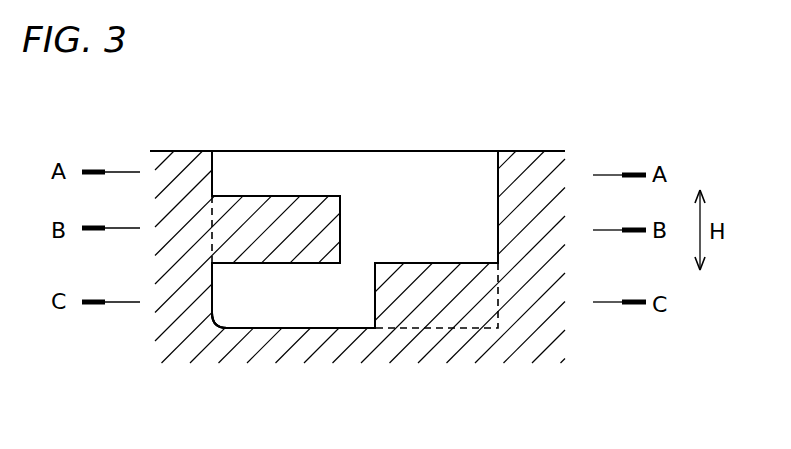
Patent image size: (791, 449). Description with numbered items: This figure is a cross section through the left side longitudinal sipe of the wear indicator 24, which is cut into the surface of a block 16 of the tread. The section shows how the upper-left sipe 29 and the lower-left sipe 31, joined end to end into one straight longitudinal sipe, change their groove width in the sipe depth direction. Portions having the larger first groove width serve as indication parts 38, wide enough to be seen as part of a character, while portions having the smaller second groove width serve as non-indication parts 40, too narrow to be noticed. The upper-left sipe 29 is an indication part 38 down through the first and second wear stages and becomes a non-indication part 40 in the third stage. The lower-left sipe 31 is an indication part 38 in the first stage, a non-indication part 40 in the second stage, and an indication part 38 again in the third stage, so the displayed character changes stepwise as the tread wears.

The block 16 is at (547, 165).
The wear indicator 24 is at (368, 127).
The upper-left sipe 29 is at (445, 159).
The lower-left sipe 31 is at (283, 159).
The indication part 38 is at (237, 170).
The non-indication part 40 is at (255, 248).